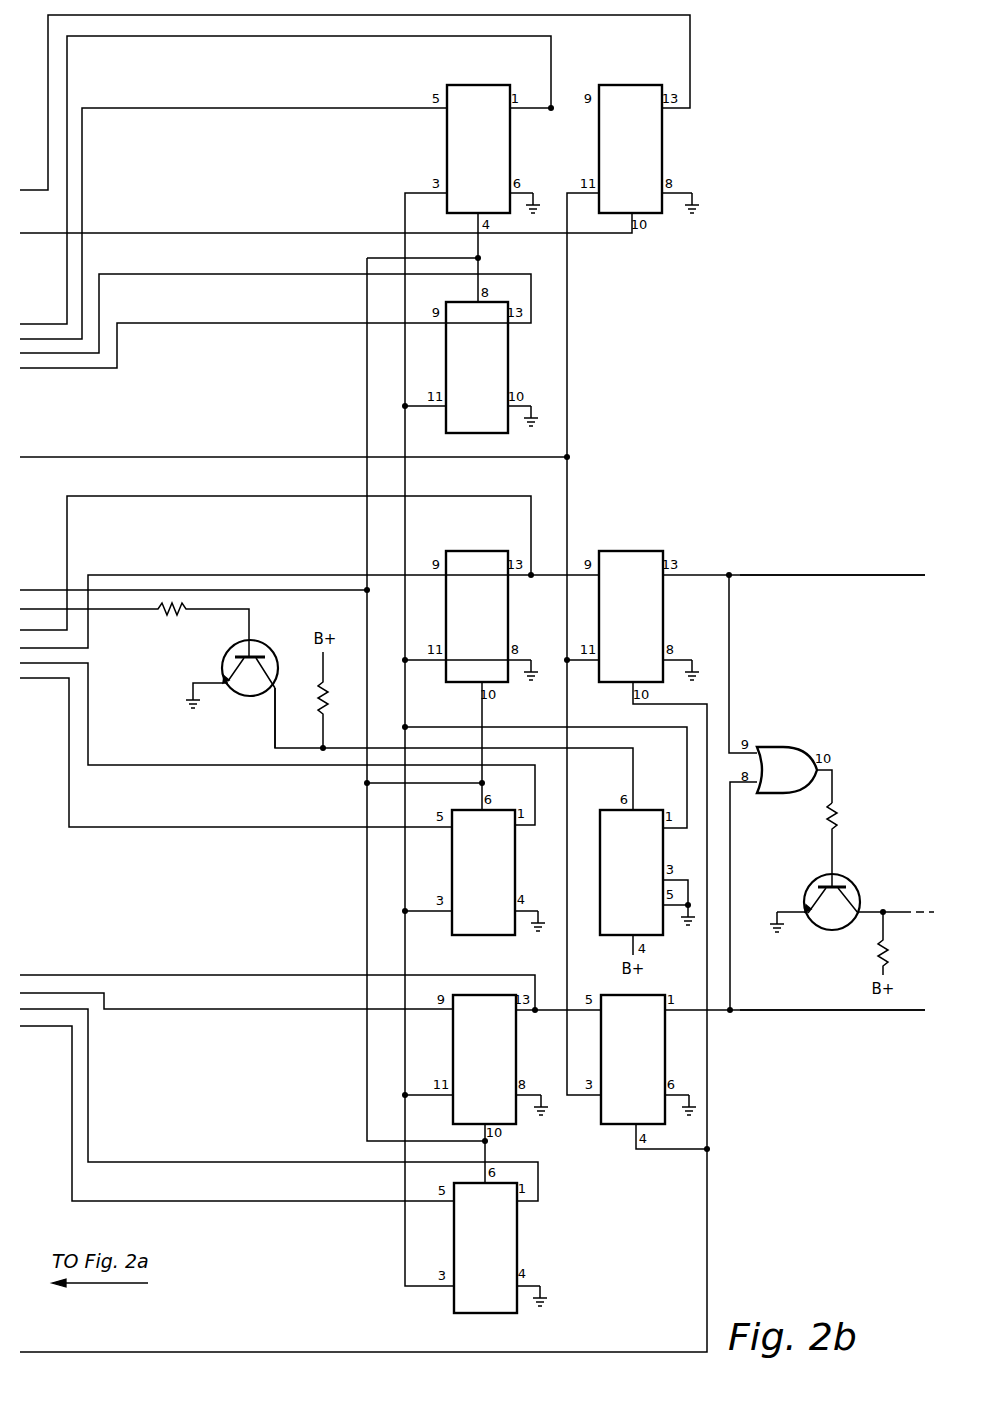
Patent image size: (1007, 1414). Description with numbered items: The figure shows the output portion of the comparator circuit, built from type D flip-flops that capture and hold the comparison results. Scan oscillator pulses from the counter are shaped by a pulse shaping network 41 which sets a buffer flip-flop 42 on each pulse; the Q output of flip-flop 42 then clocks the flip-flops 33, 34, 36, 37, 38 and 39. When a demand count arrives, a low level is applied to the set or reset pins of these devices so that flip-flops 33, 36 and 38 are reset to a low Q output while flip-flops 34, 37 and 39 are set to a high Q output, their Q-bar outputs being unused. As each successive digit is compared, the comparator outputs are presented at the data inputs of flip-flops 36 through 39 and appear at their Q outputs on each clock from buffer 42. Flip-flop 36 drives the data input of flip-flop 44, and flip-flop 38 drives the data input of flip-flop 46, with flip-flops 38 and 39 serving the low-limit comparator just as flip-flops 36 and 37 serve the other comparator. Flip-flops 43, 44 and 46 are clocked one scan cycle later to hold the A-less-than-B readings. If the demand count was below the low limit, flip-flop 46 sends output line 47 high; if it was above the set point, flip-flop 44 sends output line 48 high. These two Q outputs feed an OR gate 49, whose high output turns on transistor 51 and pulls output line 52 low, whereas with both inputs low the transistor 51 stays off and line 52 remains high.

The flip-flop 33 is at (447, 148).
The flip-flop 34 is at (508, 385).
The flip-flop 36 is at (508, 633).
The flip-flop 37 is at (515, 885).
The flip-flop 38 is at (516, 1124).
The flip-flop 39 is at (517, 1258).
The pulse shaping network 41 is at (233, 709).
The flip-flop 42 is at (655, 810).
The flip-flop 43 is at (662, 157).
The flip-flop 44 is at (635, 551).
The flip-flop 46 is at (612, 1124).
The output line 47 is at (848, 1012).
The output line 48 is at (883, 578).
The OR gate 49 is at (790, 747).
The transistor 51 is at (852, 876).
The output line 52 is at (905, 910).